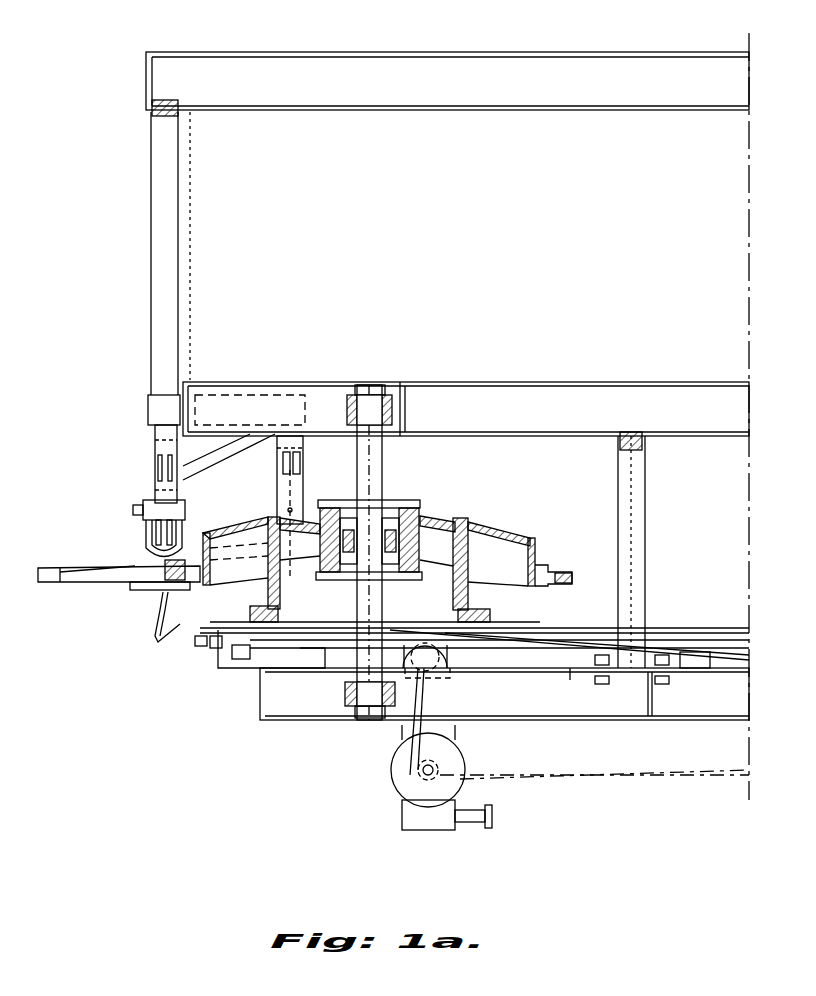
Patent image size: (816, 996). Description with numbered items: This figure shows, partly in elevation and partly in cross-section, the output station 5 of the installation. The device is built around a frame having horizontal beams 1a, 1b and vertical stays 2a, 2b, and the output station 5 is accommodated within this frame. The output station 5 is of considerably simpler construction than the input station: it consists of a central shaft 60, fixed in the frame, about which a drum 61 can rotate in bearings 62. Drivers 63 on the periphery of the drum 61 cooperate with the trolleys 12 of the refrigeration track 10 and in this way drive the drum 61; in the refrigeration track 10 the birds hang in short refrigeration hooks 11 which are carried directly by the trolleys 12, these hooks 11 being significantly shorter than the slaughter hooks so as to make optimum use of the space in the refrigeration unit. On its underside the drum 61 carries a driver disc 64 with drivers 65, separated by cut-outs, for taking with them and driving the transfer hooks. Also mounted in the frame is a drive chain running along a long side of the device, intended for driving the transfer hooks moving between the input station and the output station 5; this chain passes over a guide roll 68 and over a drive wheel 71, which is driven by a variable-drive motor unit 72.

The horizontal beam 1a is at (455, 70).
The horizontal beam 1b is at (540, 396).
The vertical stay 2a is at (176, 200).
The vertical stay 2b is at (640, 518).
The output station 5 is at (385, 338).
The refrigeration track 10 is at (142, 530).
The refrigeration hook 11 is at (152, 628).
The trolley 12 is at (128, 550).
The central shaft 60 is at (385, 456).
The drum 61 is at (462, 525).
The bearing 62 is at (405, 520).
The driver 63 is at (560, 568).
The driver disc 64 is at (485, 612).
The driver 65 is at (525, 628).
The guide roll 68 is at (440, 680).
The drive wheel 71 is at (448, 770).
The variable-drive motor unit 72 is at (415, 780).